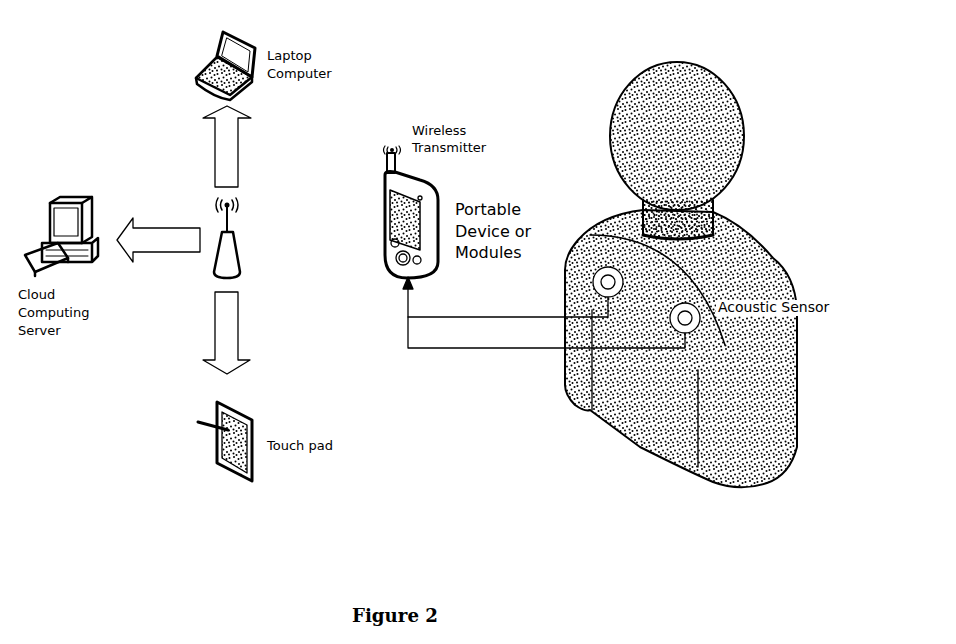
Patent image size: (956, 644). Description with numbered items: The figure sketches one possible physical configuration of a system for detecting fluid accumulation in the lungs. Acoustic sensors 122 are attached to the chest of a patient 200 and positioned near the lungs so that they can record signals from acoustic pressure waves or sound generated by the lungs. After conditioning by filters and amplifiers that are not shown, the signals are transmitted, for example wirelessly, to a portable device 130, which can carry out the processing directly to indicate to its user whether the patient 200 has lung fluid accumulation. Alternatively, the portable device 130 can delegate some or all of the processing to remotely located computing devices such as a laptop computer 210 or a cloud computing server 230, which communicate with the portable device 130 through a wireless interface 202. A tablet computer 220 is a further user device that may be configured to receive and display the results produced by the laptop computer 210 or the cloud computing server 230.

The laptop computer 210 is at (200, 67).
The cloud computing server 230 is at (67, 205).
The wireless interface 202 is at (229, 258).
The tablet computer 220 is at (253, 437).
The portable device 130 is at (388, 205).
The patient 200 is at (737, 240).
The acoustic sensors 122 is at (605, 278).